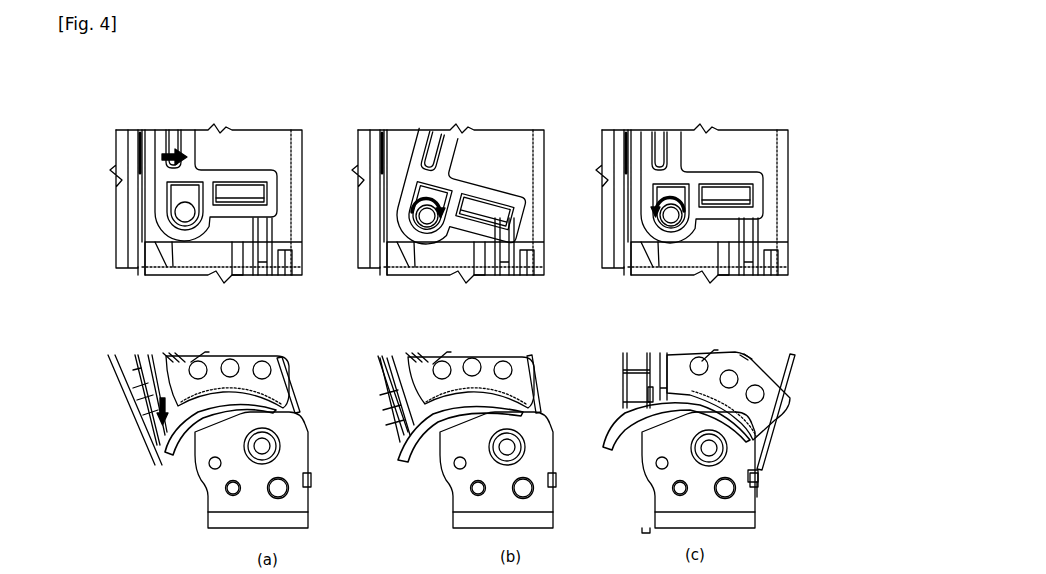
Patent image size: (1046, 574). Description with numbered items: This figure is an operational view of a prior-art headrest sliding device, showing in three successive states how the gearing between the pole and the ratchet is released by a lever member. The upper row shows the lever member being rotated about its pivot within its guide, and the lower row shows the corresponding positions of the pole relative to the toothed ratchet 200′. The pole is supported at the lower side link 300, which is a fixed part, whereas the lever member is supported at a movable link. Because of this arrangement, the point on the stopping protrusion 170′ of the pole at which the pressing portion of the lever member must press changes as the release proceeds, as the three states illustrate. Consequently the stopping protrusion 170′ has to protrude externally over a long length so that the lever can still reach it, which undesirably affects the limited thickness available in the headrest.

The stopping protrusion 170′ is at (258, 243).
The toothed head 200′ is at (162, 387).
The lower side link 300 is at (290, 507).